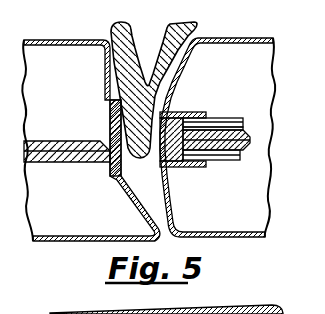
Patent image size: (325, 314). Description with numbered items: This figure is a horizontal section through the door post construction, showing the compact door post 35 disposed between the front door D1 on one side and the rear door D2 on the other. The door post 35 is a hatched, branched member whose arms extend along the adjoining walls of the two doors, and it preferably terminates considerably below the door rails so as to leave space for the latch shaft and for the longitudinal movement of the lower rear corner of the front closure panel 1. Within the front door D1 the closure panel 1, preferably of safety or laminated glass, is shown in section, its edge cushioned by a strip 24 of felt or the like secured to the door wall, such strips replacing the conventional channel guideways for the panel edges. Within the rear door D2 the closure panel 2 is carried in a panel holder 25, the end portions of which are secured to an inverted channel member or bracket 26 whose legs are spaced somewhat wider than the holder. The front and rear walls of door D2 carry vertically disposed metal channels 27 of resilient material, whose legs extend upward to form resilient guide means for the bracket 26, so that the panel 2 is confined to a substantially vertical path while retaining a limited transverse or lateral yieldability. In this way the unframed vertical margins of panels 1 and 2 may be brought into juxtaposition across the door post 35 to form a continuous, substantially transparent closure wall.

The closure panel 1 is at (80, 141).
The closure panel 2 is at (242, 127).
The strips 24 is at (112, 182).
The panel holder 25 is at (241, 155).
The inverted channel members or brackets 26 is at (236, 118).
The metal channels 27 is at (205, 167).
The door post 35 is at (110, 44).
The front door D1 is at (48, 241).
The rear door D2 is at (222, 241).